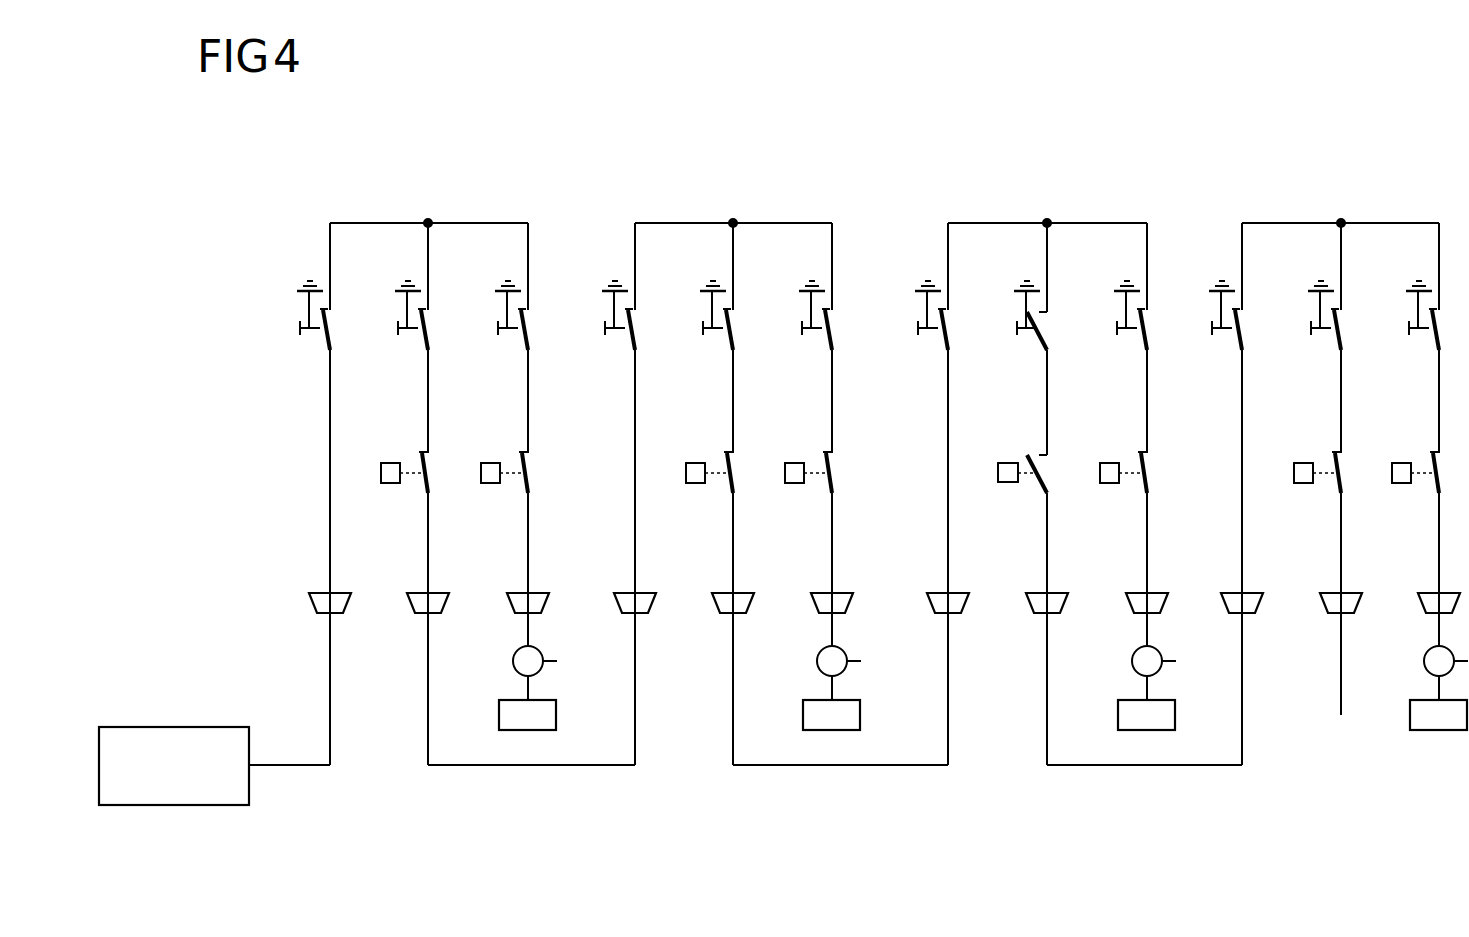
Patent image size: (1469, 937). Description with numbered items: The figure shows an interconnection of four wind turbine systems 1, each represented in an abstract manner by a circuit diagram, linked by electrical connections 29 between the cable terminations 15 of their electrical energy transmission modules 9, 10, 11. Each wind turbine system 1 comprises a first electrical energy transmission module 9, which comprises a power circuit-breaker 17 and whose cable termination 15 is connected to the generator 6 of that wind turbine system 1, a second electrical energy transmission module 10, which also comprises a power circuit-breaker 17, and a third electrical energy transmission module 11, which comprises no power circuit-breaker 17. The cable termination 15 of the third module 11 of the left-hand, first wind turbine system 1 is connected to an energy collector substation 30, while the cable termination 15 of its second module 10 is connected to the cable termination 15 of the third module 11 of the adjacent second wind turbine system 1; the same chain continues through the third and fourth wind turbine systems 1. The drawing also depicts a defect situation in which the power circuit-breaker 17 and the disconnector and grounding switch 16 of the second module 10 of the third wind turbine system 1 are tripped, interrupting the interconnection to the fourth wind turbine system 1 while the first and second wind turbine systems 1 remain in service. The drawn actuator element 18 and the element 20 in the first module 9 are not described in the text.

The wind turbine system 1 is at (391, 155).
The generator 6 is at (498, 716).
The first electrical energy transmission module 9 is at (530, 212).
The second electrical energy transmission module 10 is at (433, 212).
The third electrical energy transmission module 11 is at (328, 212).
The cable termination 15 is at (312, 603).
The disconnector and grounding switch 16 is at (326, 345).
The power circuit-breaker 17 is at (426, 490).
The drive unit 18 is at (390, 462).
The voltage transformer 20 is at (513, 661).
The electrical connection 29 is at (527, 768).
The energy collector substation 30 is at (181, 806).